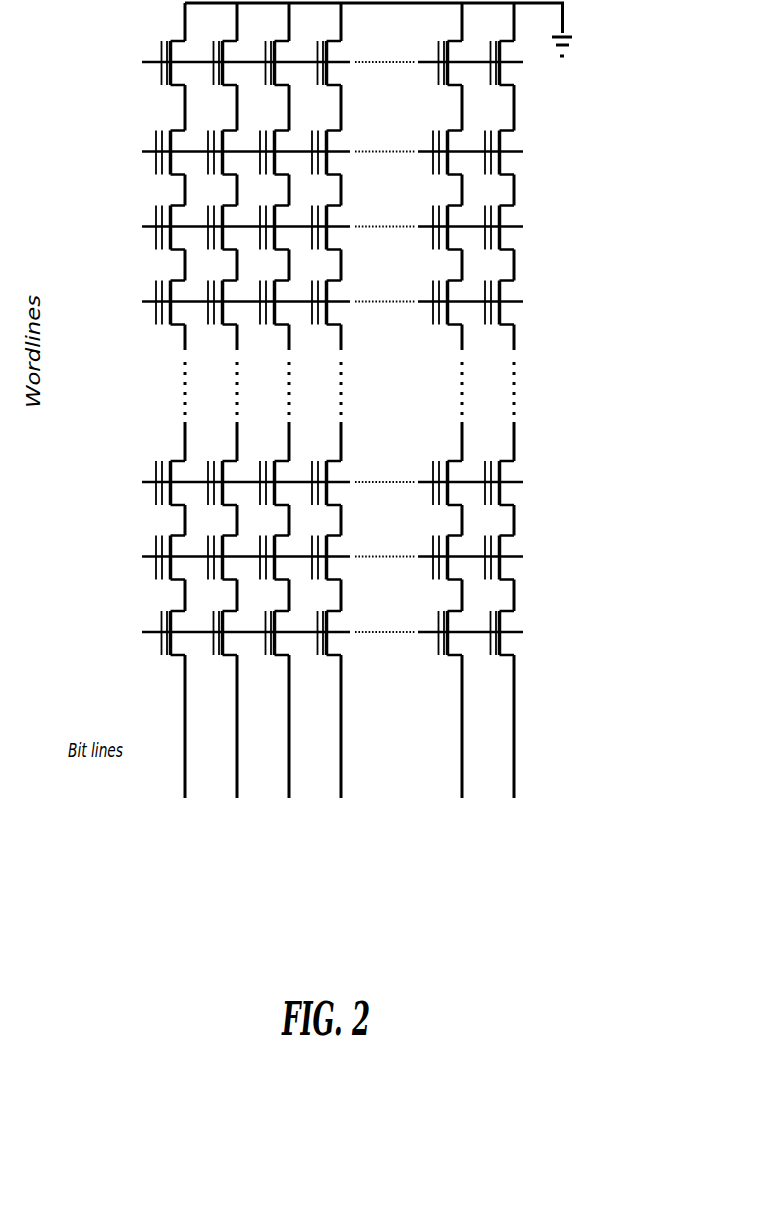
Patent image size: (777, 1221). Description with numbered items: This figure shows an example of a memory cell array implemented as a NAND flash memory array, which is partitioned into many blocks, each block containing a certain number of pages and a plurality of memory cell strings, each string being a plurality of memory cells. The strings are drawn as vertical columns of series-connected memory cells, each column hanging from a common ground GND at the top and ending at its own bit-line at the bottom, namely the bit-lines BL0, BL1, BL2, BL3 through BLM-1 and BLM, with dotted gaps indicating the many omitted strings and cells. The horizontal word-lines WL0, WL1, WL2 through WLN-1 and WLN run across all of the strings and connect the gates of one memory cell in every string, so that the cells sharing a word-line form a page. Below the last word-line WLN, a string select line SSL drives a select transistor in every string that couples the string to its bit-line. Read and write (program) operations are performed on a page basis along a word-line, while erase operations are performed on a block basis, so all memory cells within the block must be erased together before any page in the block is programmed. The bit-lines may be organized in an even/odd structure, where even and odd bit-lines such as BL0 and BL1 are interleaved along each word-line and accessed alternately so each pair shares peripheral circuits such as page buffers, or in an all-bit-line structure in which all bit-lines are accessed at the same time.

The ground GND is at (401, 30).
The word-line WL0 is at (311, 165).
The word-line WL1 is at (311, 229).
The word-line WL2 is at (311, 295).
The word-line WLN-1 is at (304, 485).
The word-line WLN is at (310, 550).
The string select line SSL is at (285, 638).
The bit-line BL0 is at (175, 400).
The bit-line BL1 is at (227, 400).
The bit-line BL2 is at (279, 400).
The bit-line BL3 is at (331, 400).
The bit-line BLM-1 is at (451, 400).
The bit-line BLM is at (503, 400).